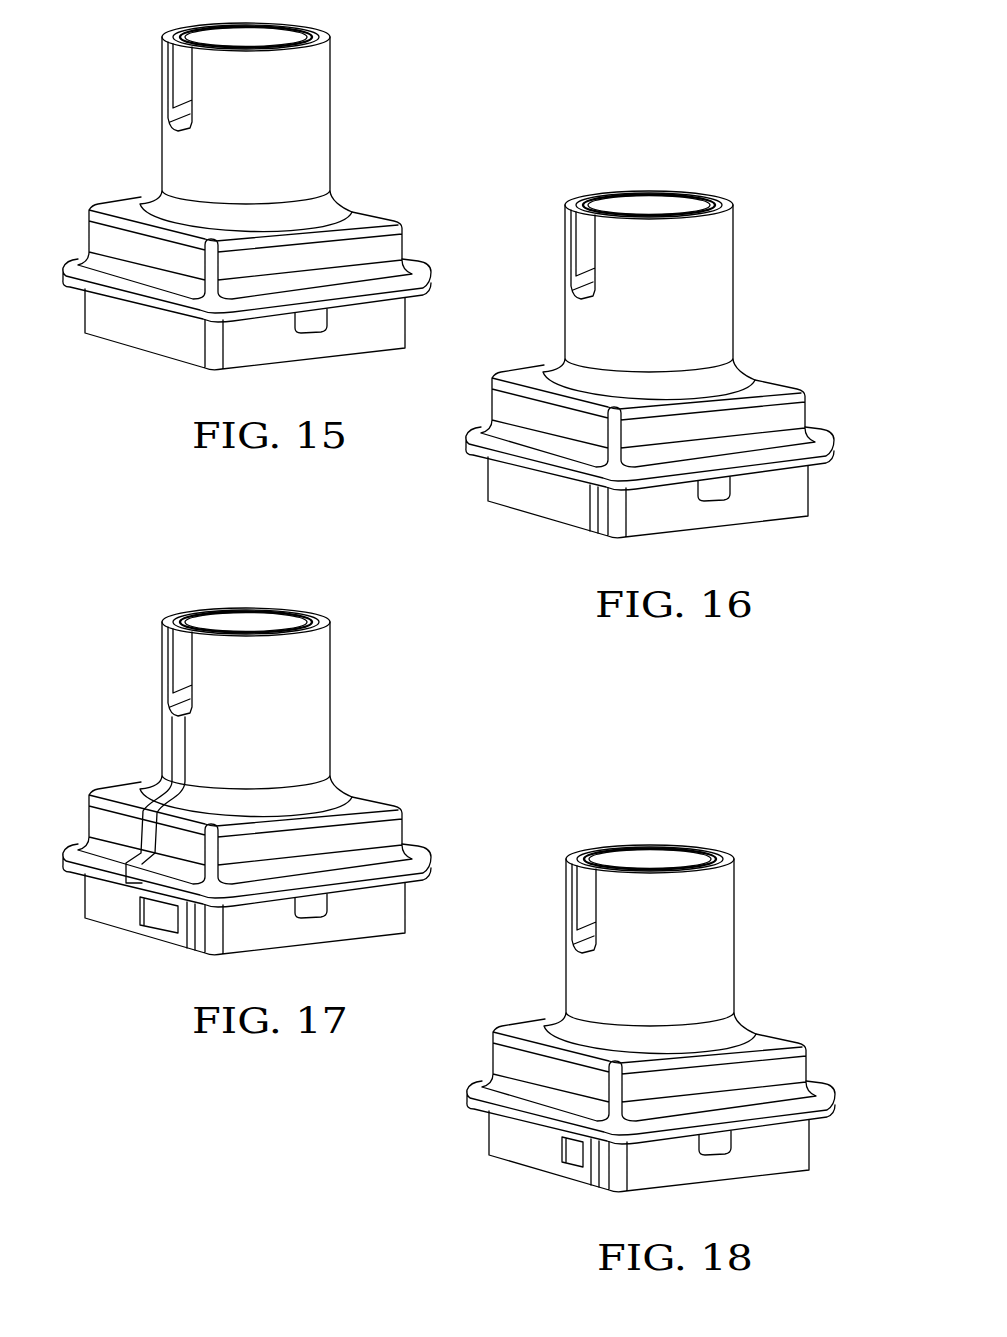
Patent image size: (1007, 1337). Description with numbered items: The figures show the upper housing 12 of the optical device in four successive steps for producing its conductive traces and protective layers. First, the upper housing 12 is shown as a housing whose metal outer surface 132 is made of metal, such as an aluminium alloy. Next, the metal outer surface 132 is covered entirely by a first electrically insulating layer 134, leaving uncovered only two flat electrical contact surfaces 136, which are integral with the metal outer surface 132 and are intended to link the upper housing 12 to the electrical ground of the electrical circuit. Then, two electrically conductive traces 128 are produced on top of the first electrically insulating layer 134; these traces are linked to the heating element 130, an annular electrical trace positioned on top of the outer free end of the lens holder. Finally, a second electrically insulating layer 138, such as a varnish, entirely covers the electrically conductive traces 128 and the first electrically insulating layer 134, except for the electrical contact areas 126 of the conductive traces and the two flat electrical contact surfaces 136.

In FIG. 15, the upper housing 12 is at (249, 196).
In FIG. 16, the upper housing 12 is at (640, 389).
In FIG. 17, the upper housing 12 is at (252, 793).
In FIG. 18, the upper housing 12 is at (651, 1050).
In FIG. 17, the electrical contact areas 126 is at (133, 942).
In FIG. 18, the electrical contact areas 126 is at (550, 1164).
In FIG. 17, the electrically conductive traces 128 is at (175, 735).
In FIG. 17, the heating element 130 is at (192, 613).
In FIG. 15, the metal outer surface 132 is at (128, 181).
In FIG. 16, the metal outer surface 132 is at (624, 476).
In FIG. 17, the metal outer surface 132 is at (230, 903).
In FIG. 18, the metal outer surface 132 is at (636, 1137).
In FIG. 16, the first electrically insulating layer 134 is at (751, 356).
In FIG. 17, the first electrically insulating layer 134 is at (259, 722).
In FIG. 16, the flat electrical contact surfaces 136 is at (593, 500).
In FIG. 17, the flat electrical contact surfaces 136 is at (185, 938).
In FIG. 18, the flat electrical contact surfaces 136 is at (593, 1165).
In FIG. 18, the second electrically insulating layer 138 is at (751, 1010).